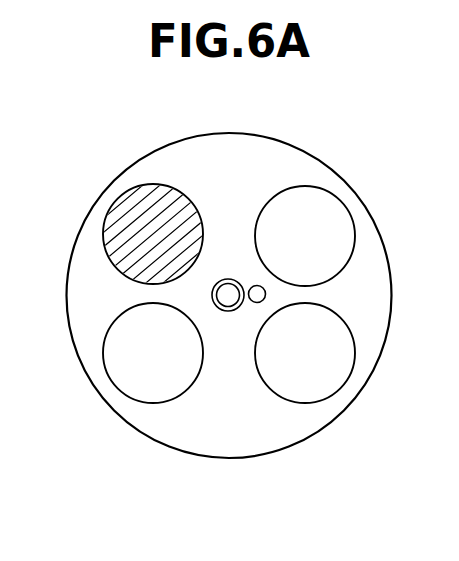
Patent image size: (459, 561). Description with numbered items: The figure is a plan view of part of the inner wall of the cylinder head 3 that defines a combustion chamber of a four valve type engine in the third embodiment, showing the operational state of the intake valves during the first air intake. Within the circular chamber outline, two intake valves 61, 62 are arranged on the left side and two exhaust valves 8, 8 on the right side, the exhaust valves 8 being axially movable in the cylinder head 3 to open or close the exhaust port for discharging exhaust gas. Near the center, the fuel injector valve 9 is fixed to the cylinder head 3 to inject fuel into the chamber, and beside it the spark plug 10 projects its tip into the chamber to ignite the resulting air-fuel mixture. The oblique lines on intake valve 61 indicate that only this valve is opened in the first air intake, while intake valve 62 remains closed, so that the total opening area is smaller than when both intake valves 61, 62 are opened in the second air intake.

The cylinder head 3 is at (246, 445).
The exhaust valve 8 is at (345, 208).
The fuel injector valve 9 is at (217, 280).
The spark plug 10 is at (248, 284).
The intake valve 61 is at (109, 213).
The intake valve 62 is at (117, 380).